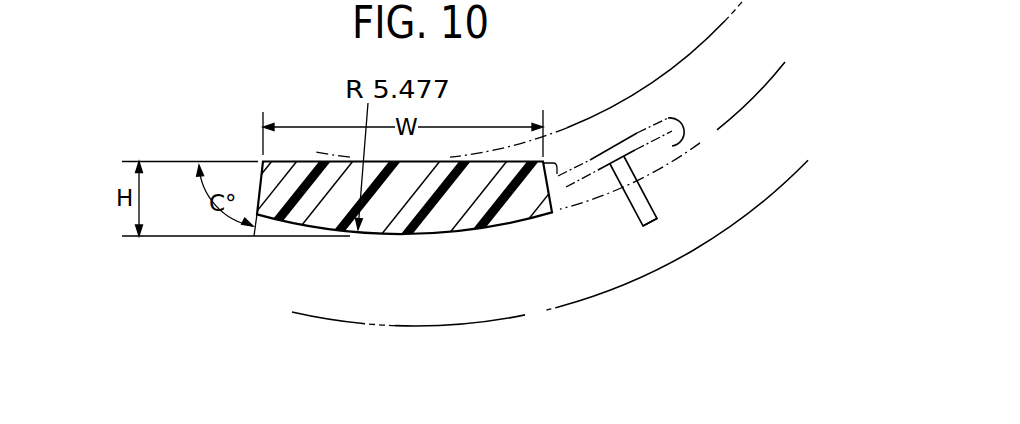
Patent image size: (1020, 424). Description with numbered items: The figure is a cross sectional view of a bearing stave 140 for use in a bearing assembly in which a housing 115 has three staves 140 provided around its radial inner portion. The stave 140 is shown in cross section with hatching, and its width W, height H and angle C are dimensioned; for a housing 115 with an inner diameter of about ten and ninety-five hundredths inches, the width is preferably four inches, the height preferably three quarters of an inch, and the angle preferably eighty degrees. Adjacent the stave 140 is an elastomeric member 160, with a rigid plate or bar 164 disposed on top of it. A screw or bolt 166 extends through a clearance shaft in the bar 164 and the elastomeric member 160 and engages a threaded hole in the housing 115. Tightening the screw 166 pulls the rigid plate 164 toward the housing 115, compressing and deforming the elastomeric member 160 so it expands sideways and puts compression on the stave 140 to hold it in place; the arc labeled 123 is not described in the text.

The stave 140 is at (461, 234).
The outer arc 123 is at (722, 25).
The rigid plate 164 is at (650, 130).
The elastomeric member 160 is at (670, 145).
The screw 166 is at (628, 197).
The housing 115 is at (752, 216).